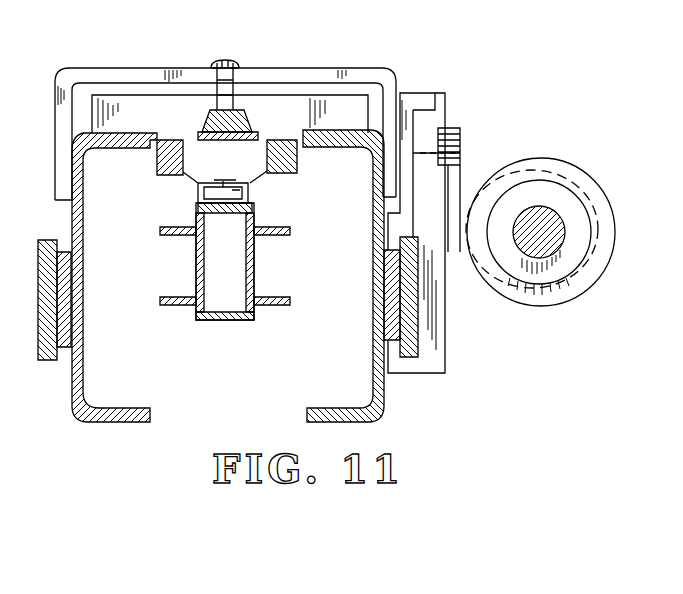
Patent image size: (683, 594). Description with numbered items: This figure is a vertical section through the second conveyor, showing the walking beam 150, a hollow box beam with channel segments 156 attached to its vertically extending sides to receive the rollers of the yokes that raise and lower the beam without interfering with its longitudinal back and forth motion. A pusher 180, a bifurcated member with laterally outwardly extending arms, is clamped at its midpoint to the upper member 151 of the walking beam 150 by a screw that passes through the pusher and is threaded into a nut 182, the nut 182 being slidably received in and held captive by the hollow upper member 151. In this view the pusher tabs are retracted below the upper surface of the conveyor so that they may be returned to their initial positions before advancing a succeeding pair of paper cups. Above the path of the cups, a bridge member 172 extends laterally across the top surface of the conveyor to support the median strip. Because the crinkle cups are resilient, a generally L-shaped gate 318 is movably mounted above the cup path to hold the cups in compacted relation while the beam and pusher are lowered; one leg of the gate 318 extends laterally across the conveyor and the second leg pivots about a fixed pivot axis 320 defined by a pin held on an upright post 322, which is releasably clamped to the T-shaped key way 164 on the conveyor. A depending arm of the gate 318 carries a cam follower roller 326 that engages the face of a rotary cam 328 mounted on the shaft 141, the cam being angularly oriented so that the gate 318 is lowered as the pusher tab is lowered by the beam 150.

The bridge member 172 is at (136, 68).
The gate 318 is at (270, 94).
The fixed pivot axis 320 is at (458, 127).
The cam follower roller 326 is at (470, 172).
The rotary cam 328 is at (575, 165).
The shaft 141 is at (550, 218).
The pusher 180 is at (272, 177).
The nut 182 is at (250, 196).
The upper member 151 is at (252, 206).
The channel segment 156 is at (178, 234).
The walking beam 150 is at (250, 320).
The T-shaped key way 164 is at (420, 325).
The upright post 322 is at (441, 346).